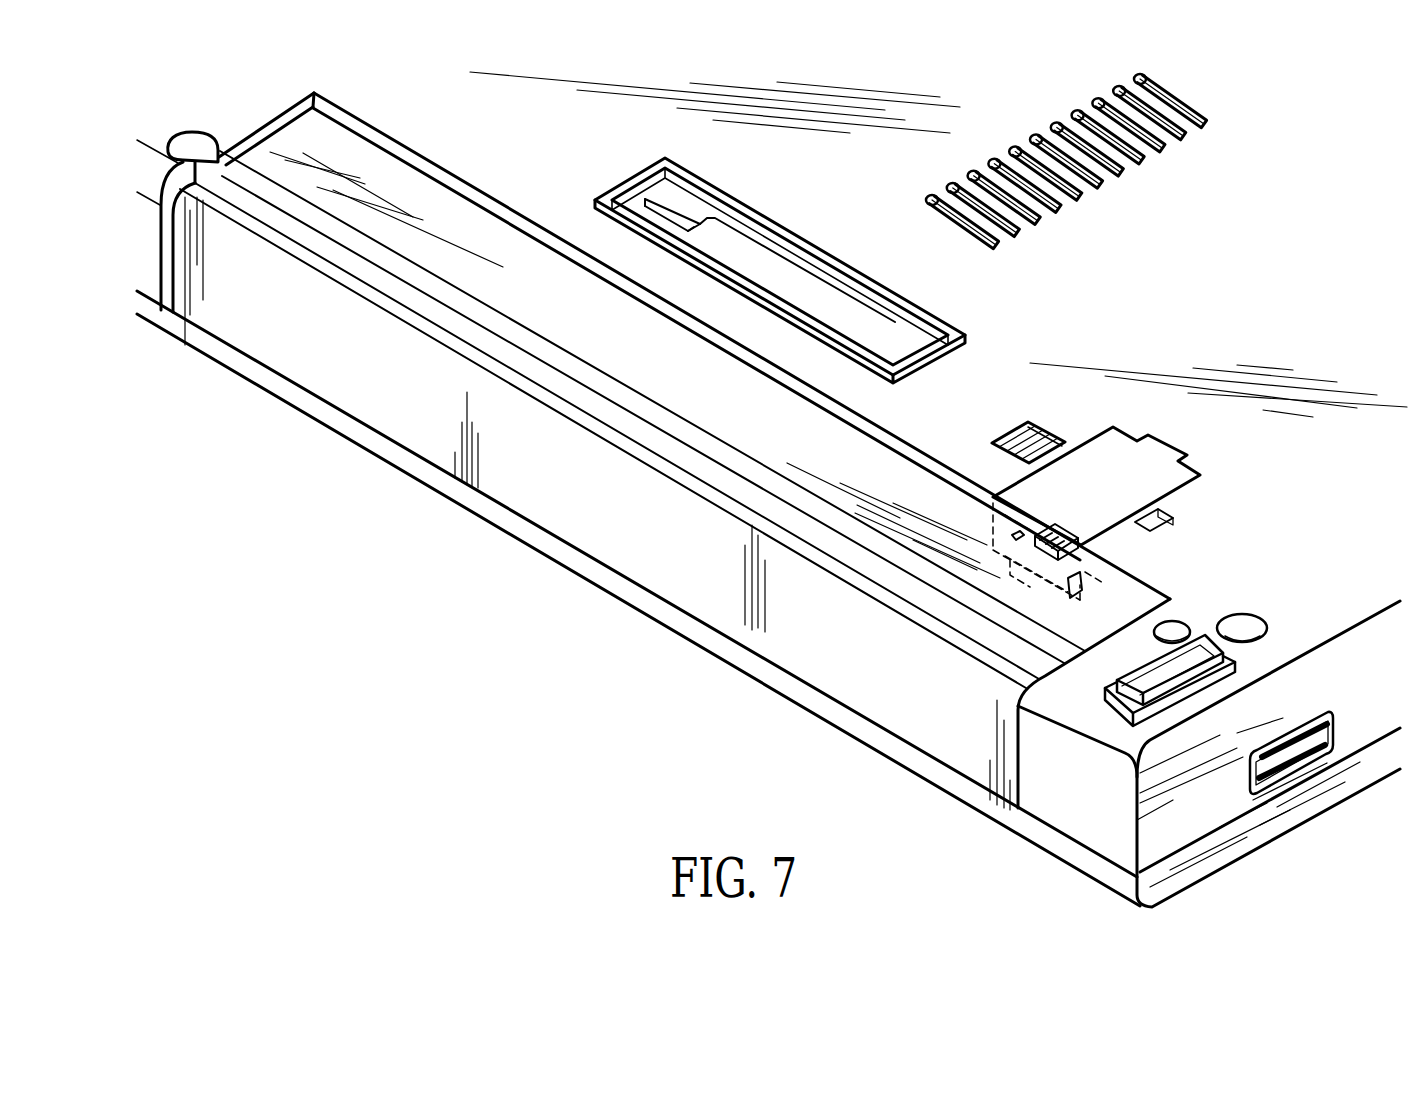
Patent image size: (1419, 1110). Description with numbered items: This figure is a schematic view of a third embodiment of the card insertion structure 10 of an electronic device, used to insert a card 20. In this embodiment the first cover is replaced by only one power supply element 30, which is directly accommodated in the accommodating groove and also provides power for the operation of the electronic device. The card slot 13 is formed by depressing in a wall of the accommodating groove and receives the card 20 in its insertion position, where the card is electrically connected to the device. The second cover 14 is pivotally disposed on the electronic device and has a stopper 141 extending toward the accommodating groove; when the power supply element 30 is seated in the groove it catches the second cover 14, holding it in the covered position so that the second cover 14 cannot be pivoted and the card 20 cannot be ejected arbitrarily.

The card insertion structure 10 is at (758, 740).
The card slot 13 is at (992, 522).
The second cover 14 is at (1147, 487).
The stopper 141 is at (1088, 543).
The card 20 is at (1080, 551).
The power supply element 30 is at (528, 398).